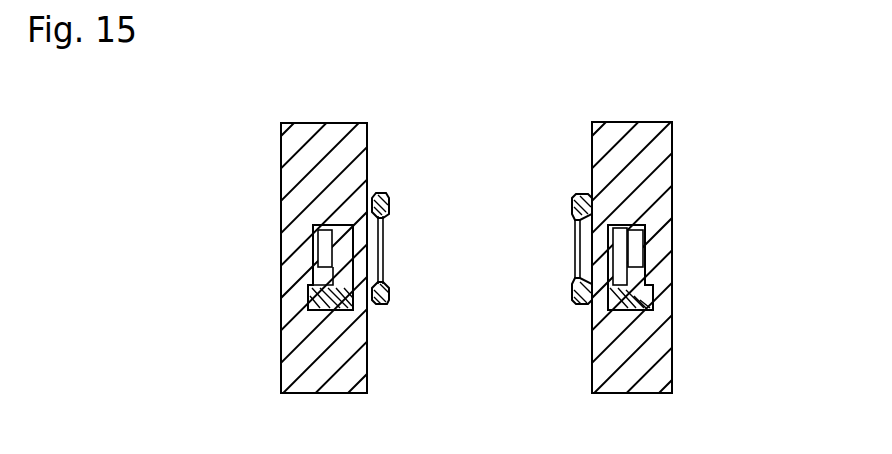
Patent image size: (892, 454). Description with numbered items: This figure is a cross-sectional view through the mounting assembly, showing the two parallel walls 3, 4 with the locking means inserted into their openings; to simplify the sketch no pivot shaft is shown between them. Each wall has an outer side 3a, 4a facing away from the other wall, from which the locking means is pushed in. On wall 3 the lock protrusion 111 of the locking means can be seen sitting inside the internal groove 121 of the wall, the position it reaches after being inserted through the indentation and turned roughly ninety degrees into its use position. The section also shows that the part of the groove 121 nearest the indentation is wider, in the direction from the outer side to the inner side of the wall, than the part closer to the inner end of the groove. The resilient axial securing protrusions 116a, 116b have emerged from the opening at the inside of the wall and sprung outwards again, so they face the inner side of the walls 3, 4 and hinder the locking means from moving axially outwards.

The wall 3 is at (312, 122).
The outer side of wall 3a is at (278, 176).
The lock protrusion 111 is at (260, 280).
The groove 121 is at (312, 283).
The axial securing protrusion 116a is at (382, 191).
The axial securing protrusion 116b is at (388, 300).
The wall 4 is at (618, 124).
The outer side of wall 4a is at (670, 168).